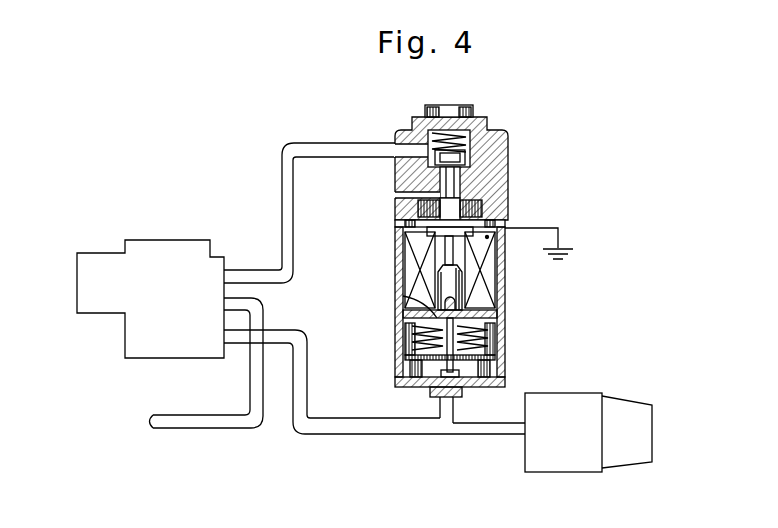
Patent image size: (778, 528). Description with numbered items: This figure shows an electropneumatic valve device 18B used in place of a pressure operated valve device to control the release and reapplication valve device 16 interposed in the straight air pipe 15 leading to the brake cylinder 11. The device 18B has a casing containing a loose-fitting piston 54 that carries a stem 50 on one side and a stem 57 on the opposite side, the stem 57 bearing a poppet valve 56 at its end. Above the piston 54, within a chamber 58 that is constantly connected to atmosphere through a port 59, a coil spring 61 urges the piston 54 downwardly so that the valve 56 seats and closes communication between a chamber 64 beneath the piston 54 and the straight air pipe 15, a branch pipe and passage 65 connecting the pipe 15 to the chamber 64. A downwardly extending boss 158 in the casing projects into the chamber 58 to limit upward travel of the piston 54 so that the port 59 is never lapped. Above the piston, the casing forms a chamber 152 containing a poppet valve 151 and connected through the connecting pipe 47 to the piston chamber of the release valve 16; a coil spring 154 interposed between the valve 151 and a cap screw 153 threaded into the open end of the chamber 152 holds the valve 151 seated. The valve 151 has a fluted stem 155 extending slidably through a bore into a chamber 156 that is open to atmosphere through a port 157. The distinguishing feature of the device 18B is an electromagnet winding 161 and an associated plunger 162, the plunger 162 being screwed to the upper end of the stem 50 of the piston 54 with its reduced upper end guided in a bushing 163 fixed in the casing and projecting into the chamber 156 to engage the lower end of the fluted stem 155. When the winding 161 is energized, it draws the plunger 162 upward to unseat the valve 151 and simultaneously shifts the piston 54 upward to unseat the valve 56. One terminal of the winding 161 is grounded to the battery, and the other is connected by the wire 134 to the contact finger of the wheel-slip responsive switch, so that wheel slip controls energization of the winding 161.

The brake cylinder 11 is at (551, 392).
The straight air pipe 15 is at (168, 423).
The release and reapplication valve device 16 is at (151, 240).
The electropneumatic valve device 18B is at (410, 130).
The connecting pipe 47 is at (317, 143).
The stem 50 is at (462, 294).
The piston 54 is at (402, 342).
The valve 56 is at (465, 367).
The stem 57 is at (443, 368).
The chamber 58 is at (402, 323).
The port 59 is at (502, 332).
The coil spring 61 is at (470, 345).
The chamber 64 is at (400, 363).
The branch pipe and passage 65 is at (450, 410).
The wire 134 is at (400, 223).
The valve 151 is at (463, 168).
The chamber 152 is at (463, 158).
The cap screw 153 is at (473, 111).
The coil spring 154 is at (478, 146).
The fluted stem 155 is at (407, 167).
The chamber 156 is at (470, 205).
The port 157 is at (407, 197).
The boss 158 is at (402, 300).
The electromagnet winding 161 is at (407, 252).
The plunger 162 is at (440, 285).
The bushing 163 is at (505, 238).